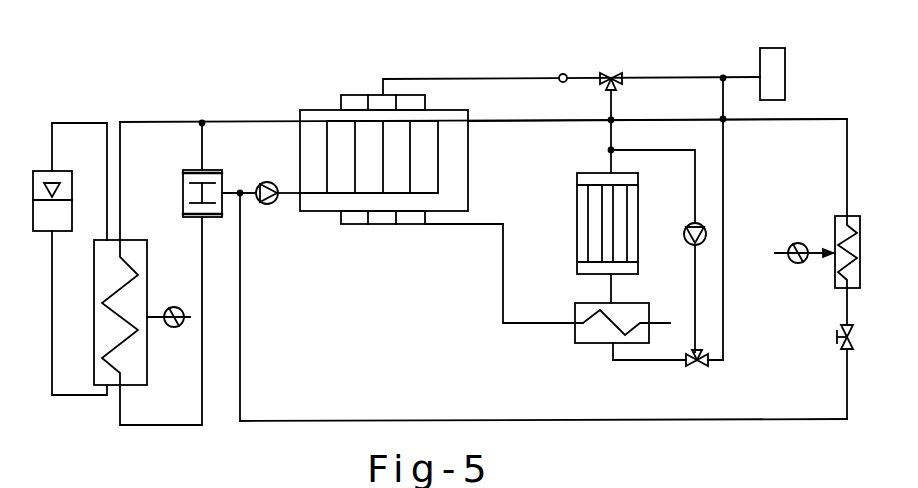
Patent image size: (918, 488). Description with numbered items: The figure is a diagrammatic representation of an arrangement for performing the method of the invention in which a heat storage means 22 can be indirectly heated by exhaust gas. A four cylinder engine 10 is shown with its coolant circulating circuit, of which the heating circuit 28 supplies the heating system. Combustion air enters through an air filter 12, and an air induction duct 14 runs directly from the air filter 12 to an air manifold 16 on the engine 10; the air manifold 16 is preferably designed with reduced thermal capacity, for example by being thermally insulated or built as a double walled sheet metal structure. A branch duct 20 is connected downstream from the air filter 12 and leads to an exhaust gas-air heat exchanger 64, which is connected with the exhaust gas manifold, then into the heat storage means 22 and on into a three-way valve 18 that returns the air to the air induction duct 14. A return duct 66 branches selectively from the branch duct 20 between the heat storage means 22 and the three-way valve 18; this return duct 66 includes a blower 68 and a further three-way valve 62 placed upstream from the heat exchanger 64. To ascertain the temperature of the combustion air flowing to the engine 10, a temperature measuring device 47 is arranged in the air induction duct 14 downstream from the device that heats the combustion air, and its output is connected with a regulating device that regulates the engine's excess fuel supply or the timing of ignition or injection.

The four cylinder engine 10 is at (315, 158).
The air filter 12 is at (772, 48).
The air induction duct 14 is at (428, 78).
The air manifold 16 is at (340, 102).
The three-way valve 18 is at (611, 72).
The branch duct 20 is at (723, 362).
The heat storage means 22 is at (575, 235).
The heating circuit 28 is at (802, 120).
The temperature measuring device 47 is at (560, 83).
The three-way valve 62 is at (697, 368).
The exhaust gas-air heat exchanger 64 is at (588, 345).
The return duct 66 is at (693, 203).
The blower 68 is at (685, 242).